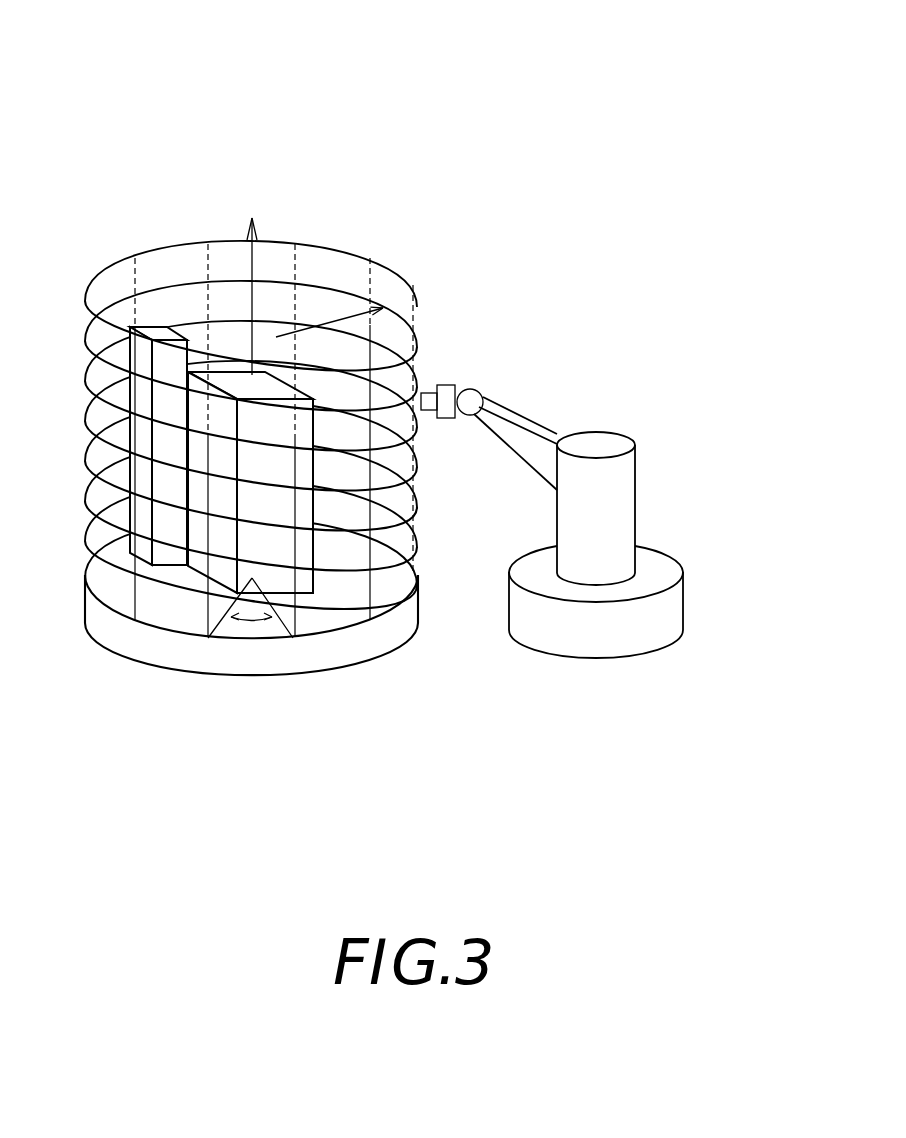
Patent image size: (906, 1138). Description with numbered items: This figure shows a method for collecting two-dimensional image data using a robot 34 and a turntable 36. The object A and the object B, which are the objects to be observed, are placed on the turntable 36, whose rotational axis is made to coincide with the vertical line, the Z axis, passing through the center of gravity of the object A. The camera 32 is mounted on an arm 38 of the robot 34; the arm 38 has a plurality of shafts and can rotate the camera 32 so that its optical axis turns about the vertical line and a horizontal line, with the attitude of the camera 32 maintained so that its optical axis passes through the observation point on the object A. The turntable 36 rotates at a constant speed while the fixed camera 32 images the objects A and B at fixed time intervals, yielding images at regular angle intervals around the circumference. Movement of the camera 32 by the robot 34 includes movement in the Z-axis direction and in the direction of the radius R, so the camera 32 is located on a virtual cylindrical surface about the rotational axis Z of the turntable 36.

The object A is at (242, 380).
The object B is at (164, 330).
The rotational axis / Z axis Z is at (253, 275).
The radius R is at (340, 318).
The camera 32 is at (448, 383).
The robot 34 is at (637, 488).
The turntable 36 is at (167, 652).
The arm 38 is at (543, 423).